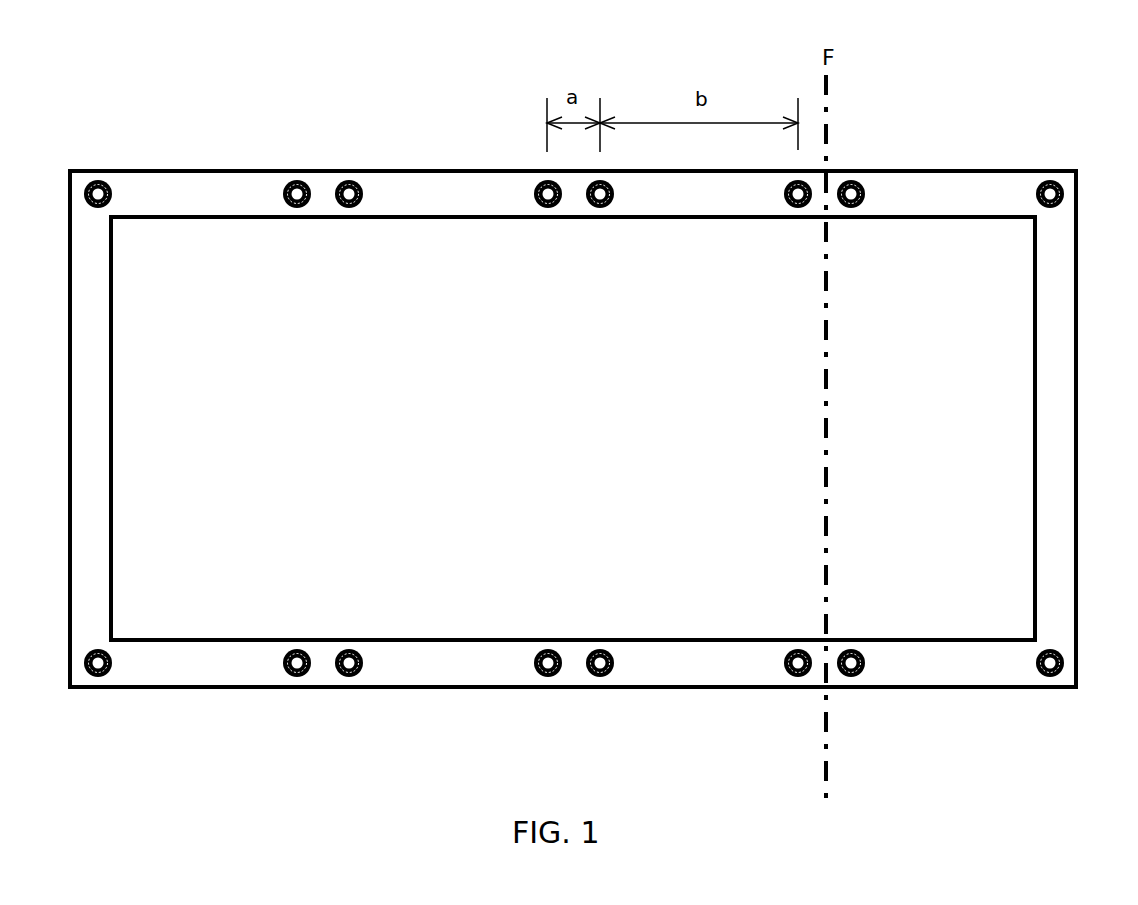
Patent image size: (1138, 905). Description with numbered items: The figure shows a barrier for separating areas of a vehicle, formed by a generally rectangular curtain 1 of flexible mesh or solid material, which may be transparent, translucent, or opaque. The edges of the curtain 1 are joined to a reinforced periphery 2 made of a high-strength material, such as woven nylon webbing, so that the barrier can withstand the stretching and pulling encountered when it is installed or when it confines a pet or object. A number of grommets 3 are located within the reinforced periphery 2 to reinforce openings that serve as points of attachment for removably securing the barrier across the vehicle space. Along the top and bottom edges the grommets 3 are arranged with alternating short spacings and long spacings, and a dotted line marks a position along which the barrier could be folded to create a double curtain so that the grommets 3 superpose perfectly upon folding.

The curtain 1 is at (188, 310).
The reinforced periphery 2 is at (243, 190).
The grommets 3 is at (350, 177).